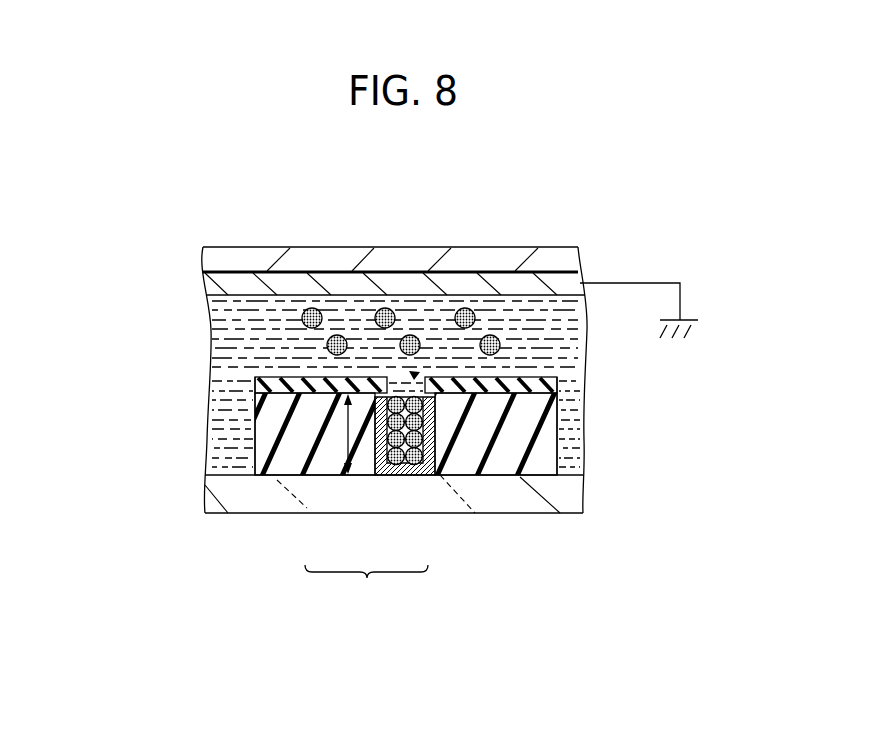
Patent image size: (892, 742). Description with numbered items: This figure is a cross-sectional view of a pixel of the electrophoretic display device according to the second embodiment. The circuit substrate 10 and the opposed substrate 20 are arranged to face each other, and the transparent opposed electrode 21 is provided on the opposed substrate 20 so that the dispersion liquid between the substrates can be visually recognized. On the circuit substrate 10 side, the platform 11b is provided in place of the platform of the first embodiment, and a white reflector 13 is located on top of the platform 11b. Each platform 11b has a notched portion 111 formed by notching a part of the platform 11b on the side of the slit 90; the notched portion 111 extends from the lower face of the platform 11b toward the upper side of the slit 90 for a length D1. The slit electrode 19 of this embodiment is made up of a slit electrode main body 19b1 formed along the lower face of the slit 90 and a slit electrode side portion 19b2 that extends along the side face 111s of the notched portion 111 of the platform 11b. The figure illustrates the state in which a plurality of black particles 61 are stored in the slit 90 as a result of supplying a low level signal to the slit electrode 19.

The opposed substrate 20 is at (208, 251).
The opposed electrode 21 is at (210, 290).
The white reflector 13 is at (214, 378).
The platform 11b is at (212, 456).
The circuit substrate 10 is at (214, 500).
The slit 90 is at (415, 377).
The notched portion 111 is at (436, 479).
The side face of the notched portion 111s is at (352, 442).
The slit electrode main body 19b1 is at (360, 476).
The slit electrode side portion 19b2 is at (360, 477).
The black particles 61 is at (418, 476).
The slit electrode 19 is at (375, 597).
The length of the notched portion D1 is at (333, 434).